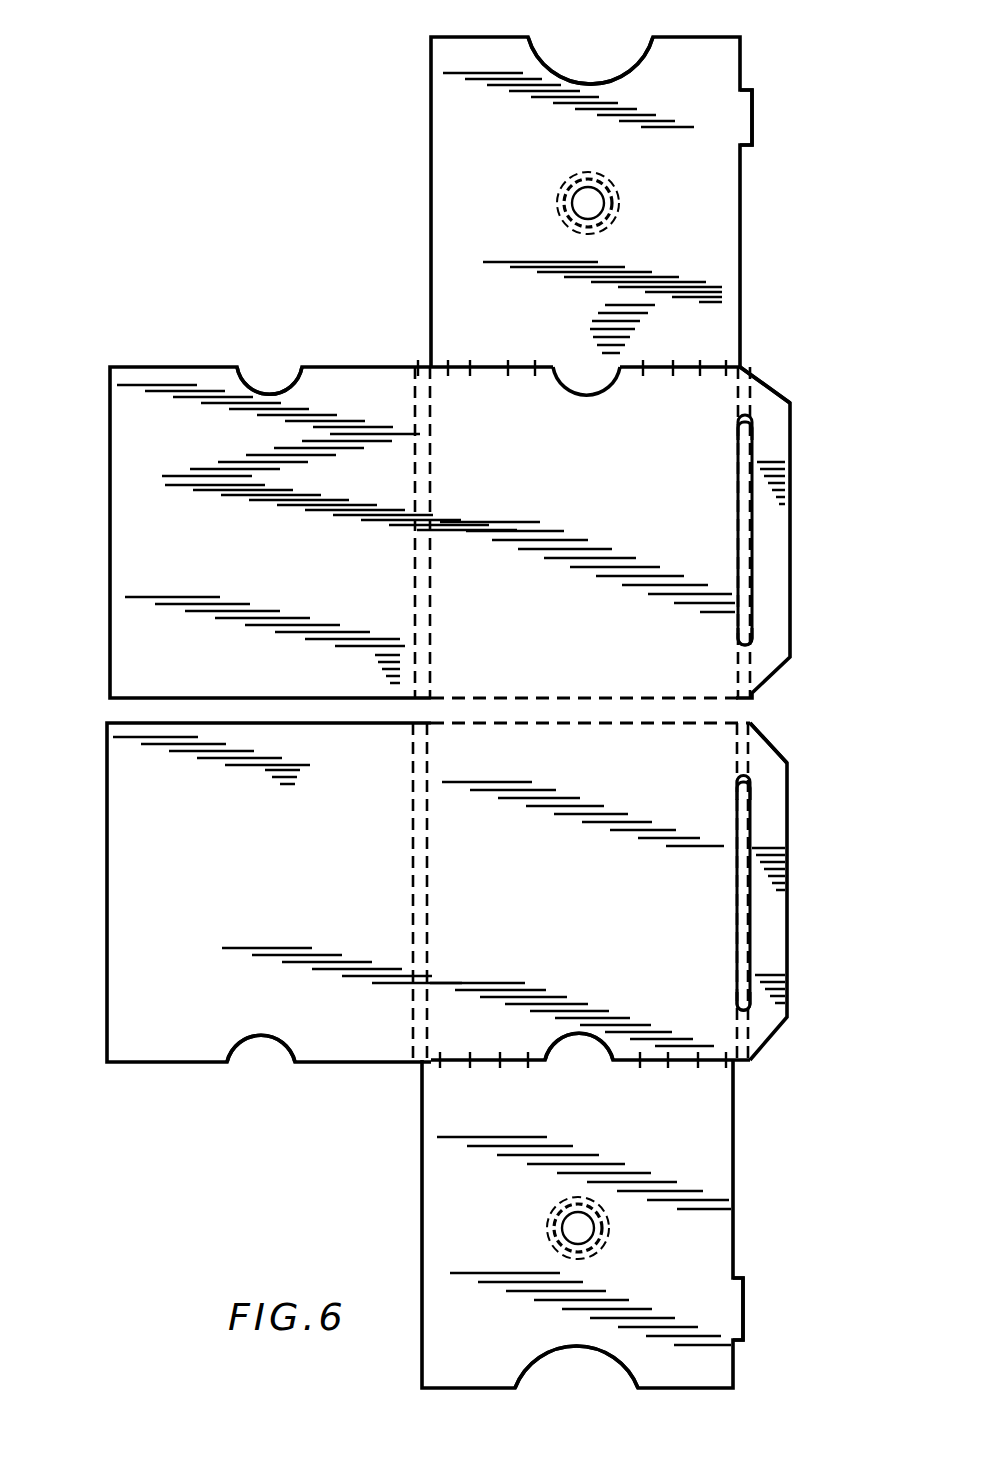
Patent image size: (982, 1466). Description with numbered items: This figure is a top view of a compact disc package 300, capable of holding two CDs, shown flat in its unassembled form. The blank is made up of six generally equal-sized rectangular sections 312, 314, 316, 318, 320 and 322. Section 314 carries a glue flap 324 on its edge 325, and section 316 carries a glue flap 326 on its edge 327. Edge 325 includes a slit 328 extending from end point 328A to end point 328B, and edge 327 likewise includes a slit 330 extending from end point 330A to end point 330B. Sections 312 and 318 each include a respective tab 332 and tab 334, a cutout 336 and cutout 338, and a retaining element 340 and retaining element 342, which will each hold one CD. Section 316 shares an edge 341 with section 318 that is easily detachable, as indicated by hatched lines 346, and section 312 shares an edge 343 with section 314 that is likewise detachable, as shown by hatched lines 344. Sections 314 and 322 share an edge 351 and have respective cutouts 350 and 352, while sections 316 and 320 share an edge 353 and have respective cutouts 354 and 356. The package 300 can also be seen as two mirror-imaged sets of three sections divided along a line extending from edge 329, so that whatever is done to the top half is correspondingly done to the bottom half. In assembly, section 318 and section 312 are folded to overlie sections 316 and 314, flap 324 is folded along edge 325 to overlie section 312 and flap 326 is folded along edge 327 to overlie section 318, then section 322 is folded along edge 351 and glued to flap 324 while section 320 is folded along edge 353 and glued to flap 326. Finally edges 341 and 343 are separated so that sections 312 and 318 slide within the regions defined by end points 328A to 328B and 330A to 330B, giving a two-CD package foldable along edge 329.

The compact disc package 300 is at (212, 212).
The rectangular section 312 is at (736, 258).
The rectangular section 314 is at (742, 690).
The rectangular section 316 is at (680, 950).
The rectangular section 318 is at (690, 1207).
The rectangular section 320 is at (138, 885).
The rectangular section 322 is at (135, 470).
The glue flap 324 is at (775, 528).
The edge 325 is at (760, 380).
The glue flap 326 is at (770, 830).
The edge 327 is at (770, 756).
The slit 328 is at (744, 540).
The end point 328A is at (736, 648).
The end point 328B is at (740, 432).
The edge 329 is at (430, 722).
The slit 330 is at (736, 920).
The end point 330A is at (740, 782).
The end point 330B is at (741, 1000).
The tab 332 is at (742, 122).
The tab 334 is at (735, 1318).
The cutout 336 is at (592, 80).
The cutout 338 is at (592, 1350).
The retaining element 340 is at (623, 193).
The edge 341 is at (735, 1062).
The retaining element 342 is at (606, 1247).
The edge 343 is at (455, 367).
The hatched lines 344 is at (482, 367).
The hatched lines 346 is at (432, 1064).
The cutout 350 is at (580, 392).
The edge 351 is at (414, 598).
The cutout 352 is at (265, 395).
The edge 353 is at (420, 890).
The cutout 354 is at (578, 1030).
The cutout 356 is at (266, 1030).